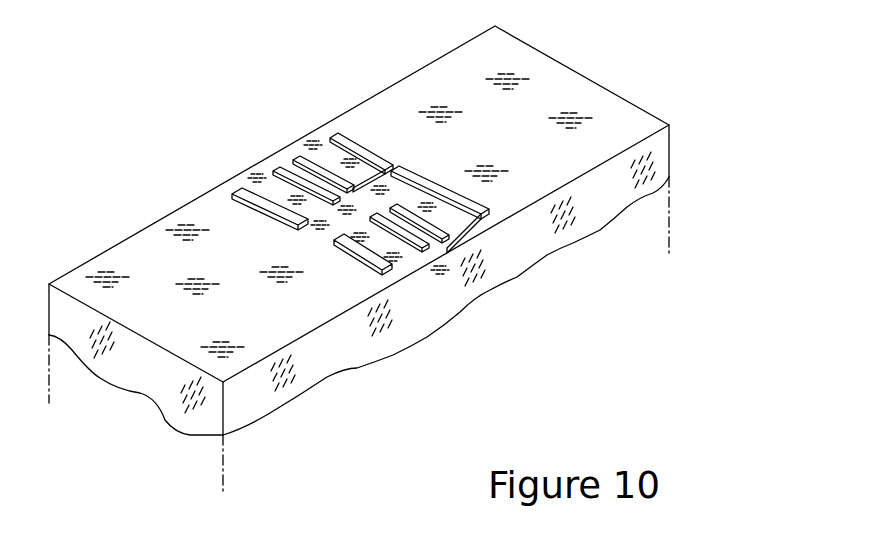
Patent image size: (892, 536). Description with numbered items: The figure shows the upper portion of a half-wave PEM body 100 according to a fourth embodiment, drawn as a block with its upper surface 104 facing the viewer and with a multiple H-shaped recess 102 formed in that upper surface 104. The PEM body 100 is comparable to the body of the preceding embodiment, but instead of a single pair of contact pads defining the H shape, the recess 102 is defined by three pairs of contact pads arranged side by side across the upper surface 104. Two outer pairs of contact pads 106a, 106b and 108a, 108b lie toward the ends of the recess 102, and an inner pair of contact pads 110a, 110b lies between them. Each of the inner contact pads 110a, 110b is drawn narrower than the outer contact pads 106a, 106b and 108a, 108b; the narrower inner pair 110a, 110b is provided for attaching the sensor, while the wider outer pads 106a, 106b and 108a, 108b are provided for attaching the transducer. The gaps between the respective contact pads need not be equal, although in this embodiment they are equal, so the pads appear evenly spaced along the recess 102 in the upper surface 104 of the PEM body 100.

The half-wave PEM body 100 is at (677, 58).
The multiple H-shaped recess 102 is at (386, 190).
The upper surface 104 is at (552, 80).
The outer contact pad 106a is at (247, 174).
The outer contact pad 106b is at (387, 257).
The outer contact pad 108a is at (321, 156).
The outer contact pad 108b is at (443, 223).
The inner contact pad 110a is at (289, 168).
The inner contact pad 110b is at (403, 230).